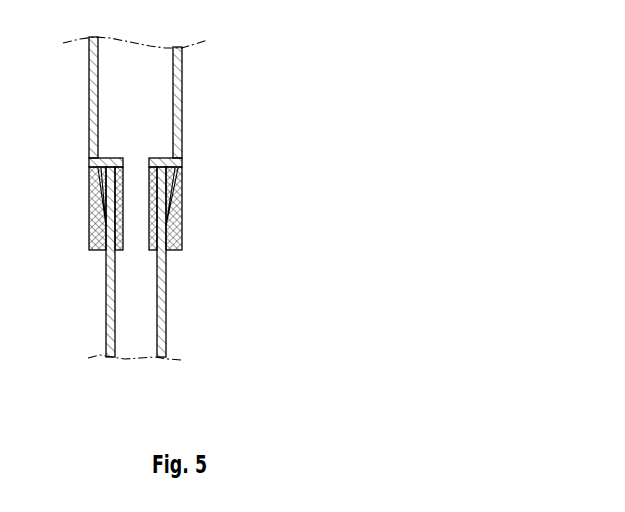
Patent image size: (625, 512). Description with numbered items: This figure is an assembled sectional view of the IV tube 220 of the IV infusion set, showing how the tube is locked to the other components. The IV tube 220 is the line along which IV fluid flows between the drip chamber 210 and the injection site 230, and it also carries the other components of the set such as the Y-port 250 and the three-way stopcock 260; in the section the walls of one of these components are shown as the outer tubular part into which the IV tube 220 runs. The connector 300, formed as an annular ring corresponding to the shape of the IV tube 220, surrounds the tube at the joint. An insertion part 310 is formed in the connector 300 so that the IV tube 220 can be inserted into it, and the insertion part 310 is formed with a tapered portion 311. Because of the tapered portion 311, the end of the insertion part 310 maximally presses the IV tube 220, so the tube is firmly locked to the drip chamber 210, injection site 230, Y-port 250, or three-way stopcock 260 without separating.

The drip chamber 210 is at (233, 102).
The injection site 230 is at (233, 102).
The Y-port 250 is at (233, 102).
The three-way stopcock 260 is at (182, 109).
The IV tube 220 is at (166, 293).
The connector 300 is at (183, 210).
The insertion part 310 is at (102, 176).
The tapered portion 311 is at (179, 177).